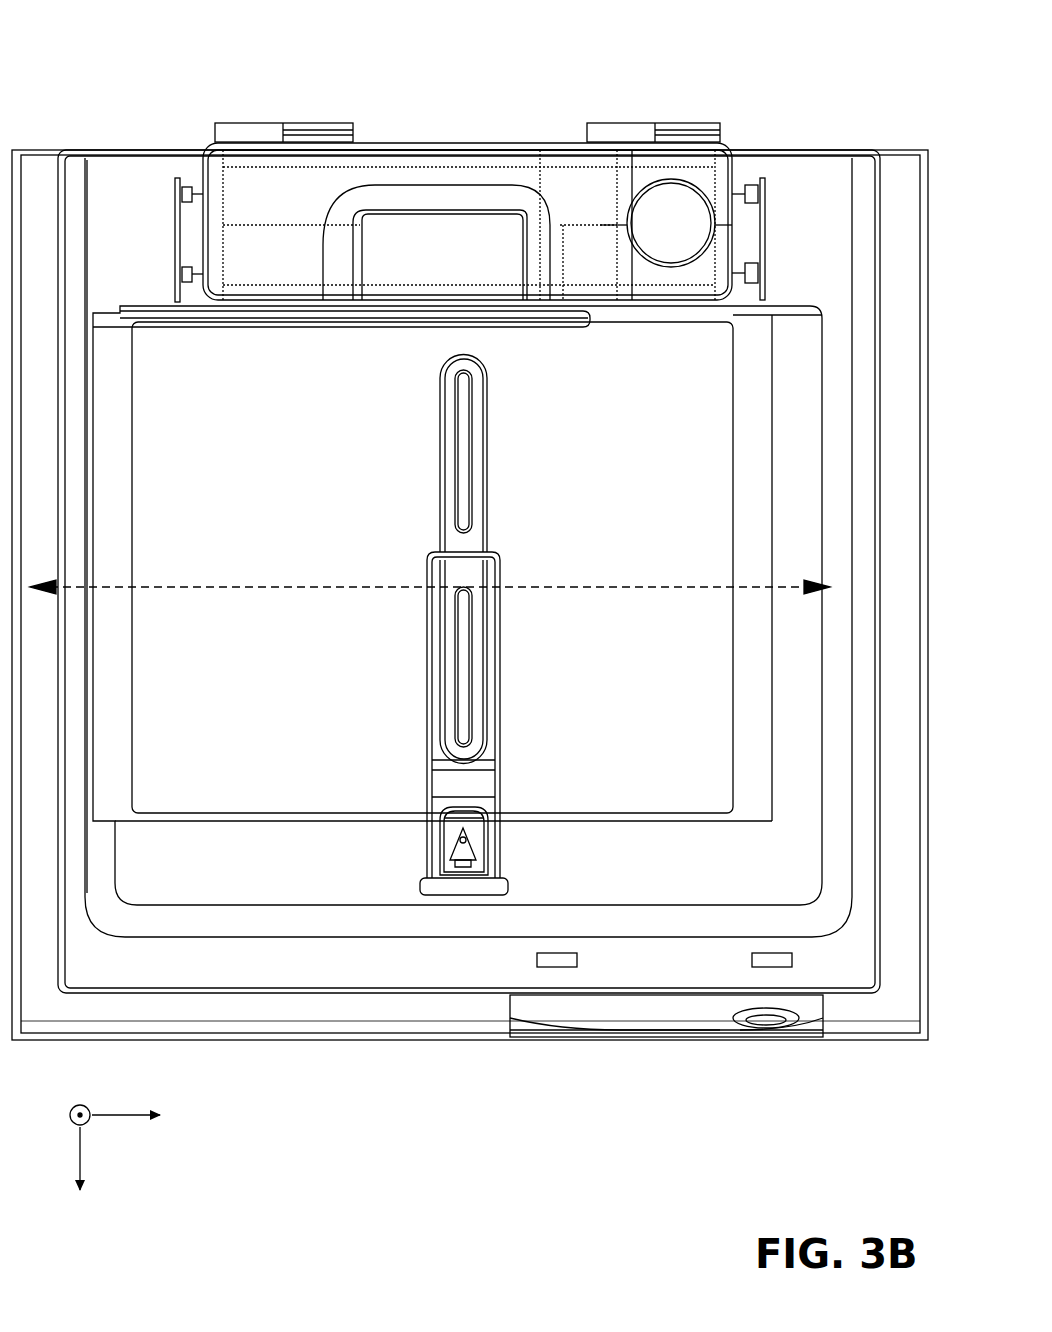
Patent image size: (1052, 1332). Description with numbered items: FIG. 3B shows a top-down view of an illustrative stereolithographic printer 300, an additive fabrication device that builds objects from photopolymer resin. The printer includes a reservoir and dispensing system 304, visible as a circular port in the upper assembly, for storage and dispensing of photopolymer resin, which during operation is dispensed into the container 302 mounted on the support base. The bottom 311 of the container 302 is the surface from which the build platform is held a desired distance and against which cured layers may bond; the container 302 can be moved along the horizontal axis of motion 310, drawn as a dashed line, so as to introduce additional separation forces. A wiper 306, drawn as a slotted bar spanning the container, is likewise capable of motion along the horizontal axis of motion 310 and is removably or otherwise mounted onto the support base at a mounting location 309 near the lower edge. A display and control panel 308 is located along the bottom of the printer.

The stereolithographic printer 300 is at (100, 30).
The container 302 is at (767, 318).
The reservoir and dispensing system 304 is at (700, 171).
The wiper 306 is at (480, 529).
The display and control panel 308 is at (652, 999).
The wiper mounting location 309 is at (438, 897).
The horizontal axis of motion 310 is at (252, 592).
The bottom of container 311 is at (432, 567).